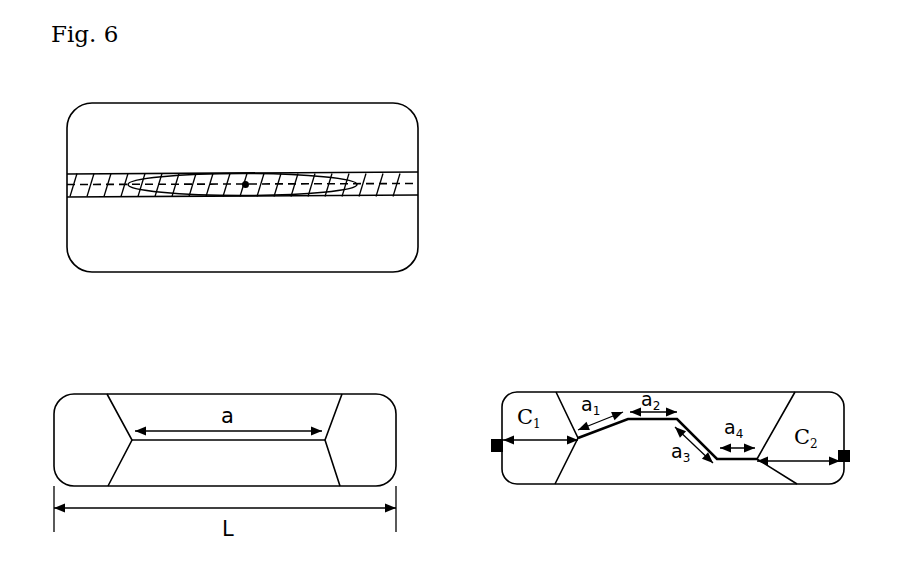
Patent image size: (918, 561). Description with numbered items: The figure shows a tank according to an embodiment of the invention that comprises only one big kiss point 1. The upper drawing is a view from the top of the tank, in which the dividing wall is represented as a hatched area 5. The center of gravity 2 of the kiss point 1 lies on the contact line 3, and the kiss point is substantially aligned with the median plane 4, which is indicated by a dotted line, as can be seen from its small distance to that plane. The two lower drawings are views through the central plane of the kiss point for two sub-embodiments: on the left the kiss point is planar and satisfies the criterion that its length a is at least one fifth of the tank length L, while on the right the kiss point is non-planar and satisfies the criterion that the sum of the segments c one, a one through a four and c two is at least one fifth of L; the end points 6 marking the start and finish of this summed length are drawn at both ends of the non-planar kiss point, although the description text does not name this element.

The kiss point 1 is at (297, 170).
The center of gravity 2 is at (253, 192).
The contact line 3 is at (102, 177).
The median plane 4 is at (110, 188).
The hatched area 5 is at (378, 175).
The contact electrode 6 is at (490, 422).